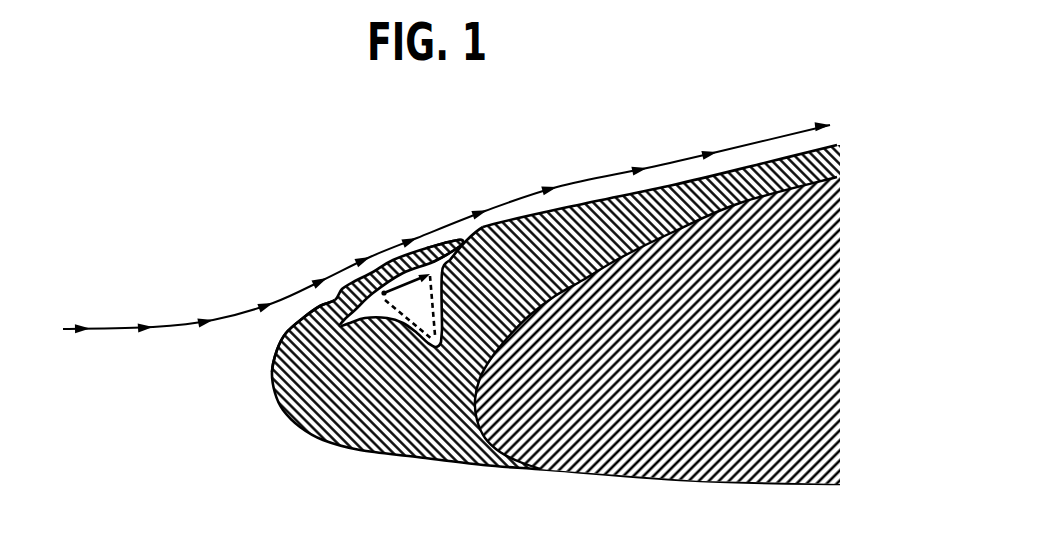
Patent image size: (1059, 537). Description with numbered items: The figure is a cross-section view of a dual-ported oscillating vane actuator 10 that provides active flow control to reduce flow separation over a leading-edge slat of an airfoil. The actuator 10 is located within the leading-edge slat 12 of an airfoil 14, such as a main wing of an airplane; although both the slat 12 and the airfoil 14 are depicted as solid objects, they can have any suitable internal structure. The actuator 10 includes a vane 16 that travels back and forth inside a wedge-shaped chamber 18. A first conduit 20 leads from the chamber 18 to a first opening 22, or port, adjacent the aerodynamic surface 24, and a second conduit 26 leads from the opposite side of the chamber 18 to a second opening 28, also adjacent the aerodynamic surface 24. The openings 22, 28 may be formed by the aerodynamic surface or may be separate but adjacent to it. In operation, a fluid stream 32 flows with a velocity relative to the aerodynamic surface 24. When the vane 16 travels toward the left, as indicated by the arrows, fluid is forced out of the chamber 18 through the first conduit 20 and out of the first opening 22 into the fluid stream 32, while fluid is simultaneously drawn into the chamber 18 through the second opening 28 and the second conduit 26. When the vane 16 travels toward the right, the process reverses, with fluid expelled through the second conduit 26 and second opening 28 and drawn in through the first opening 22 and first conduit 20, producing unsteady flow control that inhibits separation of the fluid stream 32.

The oscillating vane actuator 10 is at (238, 287).
The leading-edge slat 12 is at (360, 410).
The airfoil 14 is at (628, 390).
The vane 16 is at (433, 340).
The wedge-shaped chamber 18 is at (412, 325).
The first conduit 20 is at (333, 337).
The first opening 22 is at (338, 297).
The aerodynamic surface 24 is at (584, 198).
The second conduit 26 is at (442, 245).
The second opening 28 is at (467, 240).
The fluid stream 32 is at (742, 145).